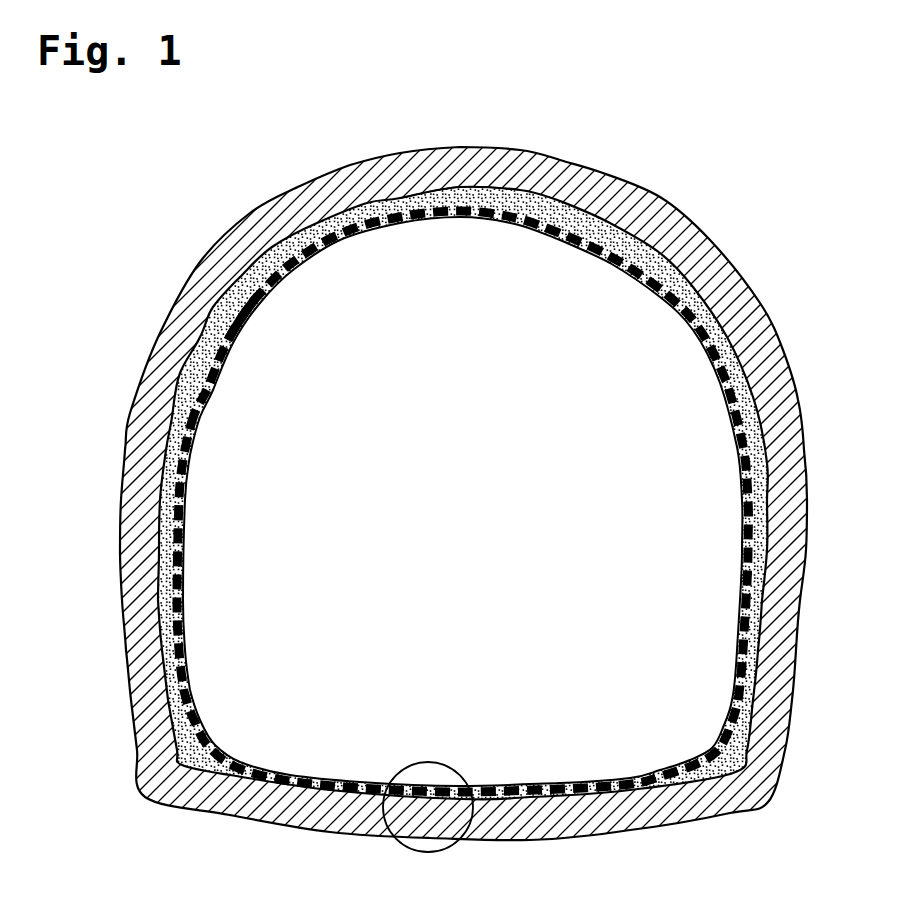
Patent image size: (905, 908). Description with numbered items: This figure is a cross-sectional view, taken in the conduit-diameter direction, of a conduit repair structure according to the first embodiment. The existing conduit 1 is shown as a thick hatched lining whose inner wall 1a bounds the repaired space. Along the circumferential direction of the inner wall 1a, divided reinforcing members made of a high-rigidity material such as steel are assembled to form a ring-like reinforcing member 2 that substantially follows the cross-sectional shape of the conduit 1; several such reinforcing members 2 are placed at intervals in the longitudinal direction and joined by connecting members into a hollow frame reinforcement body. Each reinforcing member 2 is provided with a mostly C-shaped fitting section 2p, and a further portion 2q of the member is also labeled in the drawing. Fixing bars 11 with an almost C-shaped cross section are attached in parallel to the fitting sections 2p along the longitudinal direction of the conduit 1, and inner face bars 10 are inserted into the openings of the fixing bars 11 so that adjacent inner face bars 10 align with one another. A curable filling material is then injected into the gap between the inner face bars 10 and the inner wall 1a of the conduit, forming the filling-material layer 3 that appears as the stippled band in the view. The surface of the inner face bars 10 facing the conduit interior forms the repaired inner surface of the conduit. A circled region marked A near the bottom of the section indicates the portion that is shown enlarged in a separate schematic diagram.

The conduit 1 is at (643, 222).
The inner wall of the conduit 1a is at (573, 208).
The reinforcing member 2 is at (508, 222).
The fitting section 2p is at (495, 192).
The inner portion of coating layer 2q is at (421, 200).
The filling-material layer 3 is at (293, 255).
The inner face bar 10 is at (378, 123).
The fixing bar 11 is at (249, 316).
The section A is at (445, 758).